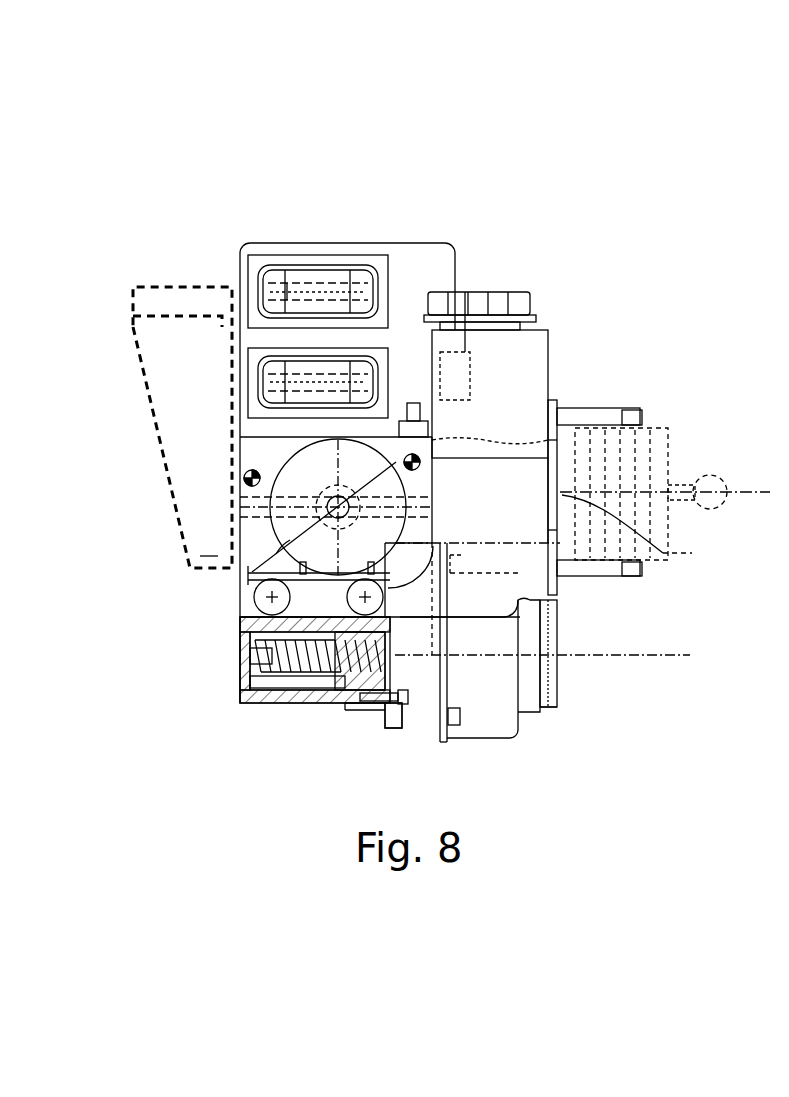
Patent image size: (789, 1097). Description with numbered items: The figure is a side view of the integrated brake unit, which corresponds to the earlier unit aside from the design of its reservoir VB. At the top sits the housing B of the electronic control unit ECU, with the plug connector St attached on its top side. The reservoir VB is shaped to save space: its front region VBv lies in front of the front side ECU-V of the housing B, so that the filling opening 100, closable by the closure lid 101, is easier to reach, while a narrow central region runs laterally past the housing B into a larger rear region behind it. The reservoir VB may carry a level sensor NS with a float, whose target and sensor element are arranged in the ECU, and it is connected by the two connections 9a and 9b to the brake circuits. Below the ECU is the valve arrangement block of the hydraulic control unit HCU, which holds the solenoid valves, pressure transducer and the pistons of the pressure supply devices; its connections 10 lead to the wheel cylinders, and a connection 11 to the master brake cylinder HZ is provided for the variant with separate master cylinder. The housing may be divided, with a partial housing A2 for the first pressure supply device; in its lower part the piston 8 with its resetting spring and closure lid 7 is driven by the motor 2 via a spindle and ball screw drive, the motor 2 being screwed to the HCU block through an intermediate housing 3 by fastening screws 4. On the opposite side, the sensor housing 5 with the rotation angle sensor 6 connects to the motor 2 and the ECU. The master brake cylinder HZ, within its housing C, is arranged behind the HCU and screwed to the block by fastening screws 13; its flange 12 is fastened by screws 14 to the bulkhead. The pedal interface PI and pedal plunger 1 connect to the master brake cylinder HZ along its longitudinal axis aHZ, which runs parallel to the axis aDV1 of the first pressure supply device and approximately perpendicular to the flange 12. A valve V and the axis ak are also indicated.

The pedal plunger 1 is at (708, 478).
The motor 2 is at (500, 740).
The intermediate housing 3 is at (412, 727).
The fastening screw 4 is at (395, 728).
The sensor housing 5 is at (548, 712).
The rotation angle sensor 6 is at (556, 677).
The closure lid 7 is at (243, 690).
The piston 8 is at (317, 680).
The connection to the reservoir 9a is at (254, 596).
The connection to the reservoir 9b is at (250, 660).
The connections to the wheel cylinder 10 is at (240, 480).
The connection to the master brake cylinder 11 is at (414, 403).
The flange of master brake cylinder 12 is at (560, 582).
The fastening screw 13 is at (567, 420).
The fastening screw to bulkhead or bracket 14 is at (613, 412).
The opening of the reservoir 100 is at (140, 322).
The closure lid of the reservoir 101 is at (192, 287).
The housing for ECU B is at (347, 243).
The electronic control unit ECU is at (240, 262).
The plug connector St is at (287, 283).
The front side of the ECU ECU-V is at (240, 255).
The reservoir VB is at (537, 320).
The level sensor NS is at (462, 355).
The hydraulic control unit HCU is at (240, 450).
The master brake cylinder HZ is at (505, 430).
The pedal interface PI is at (662, 430).
The housing for master brake cylinder and travel simulator C is at (639, 533).
The longitudinal axis of master brake cylinder aHZ is at (740, 490).
The motor axis of DV1 aDV1 is at (688, 654).
The axis of piston ak is at (420, 502).
The front region of the reservoir VBv is at (147, 367).
The valve V is at (209, 544).
The partial housing for pressure supply device DV1 A2 is at (240, 622).